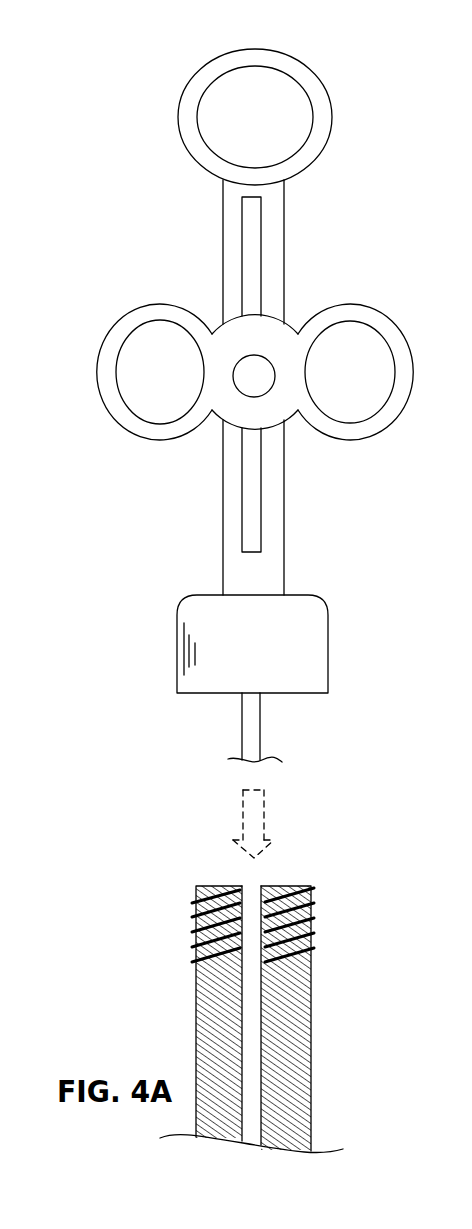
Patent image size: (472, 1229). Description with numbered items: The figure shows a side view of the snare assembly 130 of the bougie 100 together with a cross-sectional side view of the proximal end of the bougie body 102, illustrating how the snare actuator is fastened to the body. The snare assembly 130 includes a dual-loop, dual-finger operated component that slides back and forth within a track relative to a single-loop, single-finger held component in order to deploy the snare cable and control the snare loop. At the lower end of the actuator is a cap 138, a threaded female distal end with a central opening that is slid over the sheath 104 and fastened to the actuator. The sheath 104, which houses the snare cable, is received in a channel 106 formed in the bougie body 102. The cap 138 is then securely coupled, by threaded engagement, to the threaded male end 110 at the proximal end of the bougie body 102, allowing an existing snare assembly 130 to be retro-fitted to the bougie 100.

The bougie 100 is at (226, 405).
The snare assembly 130 is at (324, 213).
The cap 138 is at (310, 657).
The sheath 104 is at (258, 731).
The threaded male end 110 is at (332, 920).
The bougie body 102 is at (265, 1019).
The channel 106 is at (264, 1026).